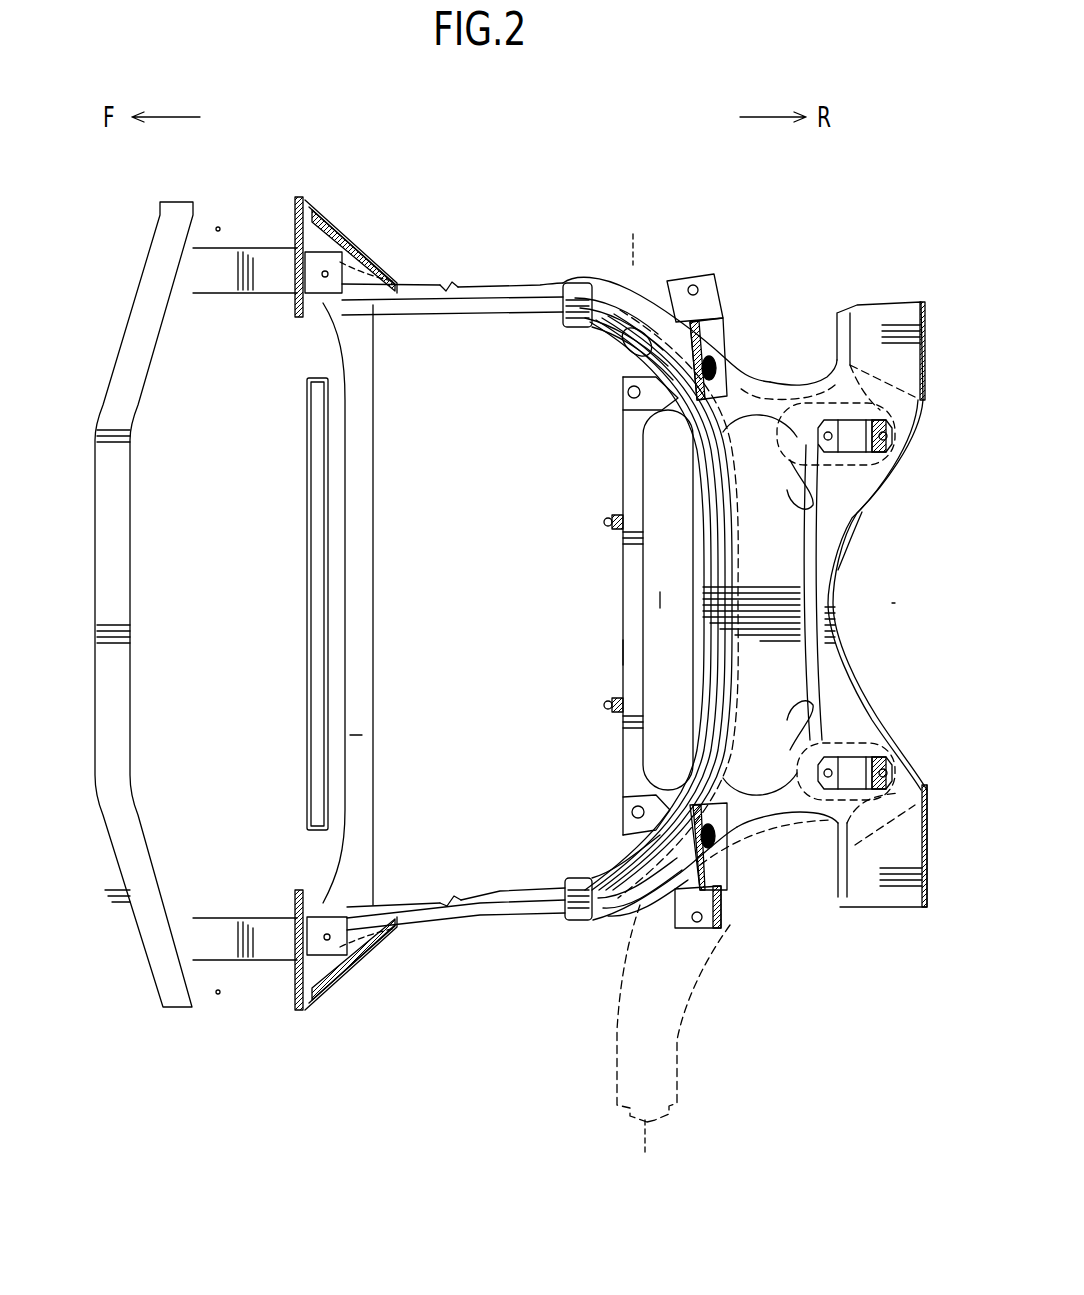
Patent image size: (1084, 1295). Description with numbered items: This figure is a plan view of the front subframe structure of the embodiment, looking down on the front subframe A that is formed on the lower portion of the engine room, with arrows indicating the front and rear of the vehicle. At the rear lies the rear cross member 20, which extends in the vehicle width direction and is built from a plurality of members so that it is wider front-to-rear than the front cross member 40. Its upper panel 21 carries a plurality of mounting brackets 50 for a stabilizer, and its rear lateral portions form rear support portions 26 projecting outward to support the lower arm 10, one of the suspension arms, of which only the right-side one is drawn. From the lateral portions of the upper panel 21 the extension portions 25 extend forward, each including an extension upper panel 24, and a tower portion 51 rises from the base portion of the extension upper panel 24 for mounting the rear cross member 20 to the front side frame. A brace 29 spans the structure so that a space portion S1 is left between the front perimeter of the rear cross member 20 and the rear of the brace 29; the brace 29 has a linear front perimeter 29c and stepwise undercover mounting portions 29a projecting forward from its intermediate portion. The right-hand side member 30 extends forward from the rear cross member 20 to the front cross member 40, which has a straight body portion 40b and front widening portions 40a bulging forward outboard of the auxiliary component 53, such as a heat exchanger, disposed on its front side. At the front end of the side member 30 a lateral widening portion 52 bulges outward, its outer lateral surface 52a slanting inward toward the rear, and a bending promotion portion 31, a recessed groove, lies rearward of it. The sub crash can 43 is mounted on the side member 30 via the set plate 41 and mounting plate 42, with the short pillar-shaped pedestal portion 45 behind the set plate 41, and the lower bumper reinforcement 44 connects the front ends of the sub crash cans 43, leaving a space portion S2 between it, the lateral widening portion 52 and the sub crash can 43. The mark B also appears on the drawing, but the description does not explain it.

The lower arm 10 is at (686, 1057).
The rear cross member 20 is at (849, 577).
The upper panel 21 is at (853, 514).
The extension upper panel 24 is at (584, 328).
The extension portion 25 is at (594, 268).
The rear support portion 26 is at (886, 310).
The brace 29 is at (611, 454).
The undercover mounting portion 29a is at (604, 521).
The front perimeter 29c is at (622, 652).
The front side member 30 is at (489, 273).
The bending promotion portion 31 is at (446, 285).
The front cross member 40 is at (375, 615).
The front widening portion 40a is at (325, 325).
The body portion 40b is at (362, 733).
The set plate 41 is at (297, 203).
The mounting plate 42 is at (305, 255).
The sub crash can 43 is at (213, 295).
The lower bumper reinforcement 44 is at (95, 578).
The pedestal portion 45 is at (360, 262).
The mounting bracket 50 is at (862, 446).
The tower portion 51 is at (734, 303).
The lateral widening portion 52 is at (332, 199).
The outer lateral surface 52a is at (345, 215).
The auxiliary component 53 is at (307, 522).
The space portion S1 is at (665, 601).
The space portion S2 is at (218, 226).
The front subframe A is at (902, 607).
The axis B is at (641, 693).